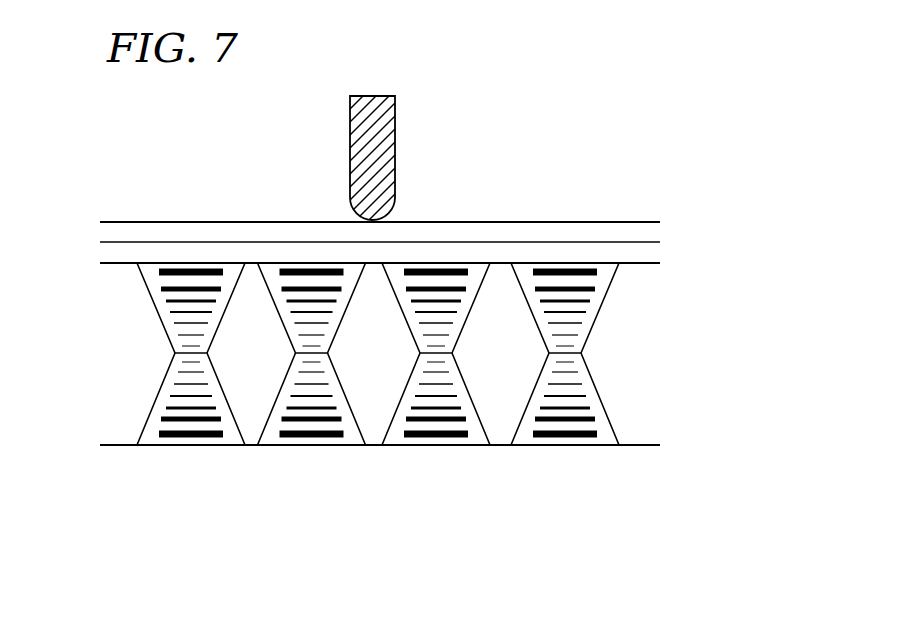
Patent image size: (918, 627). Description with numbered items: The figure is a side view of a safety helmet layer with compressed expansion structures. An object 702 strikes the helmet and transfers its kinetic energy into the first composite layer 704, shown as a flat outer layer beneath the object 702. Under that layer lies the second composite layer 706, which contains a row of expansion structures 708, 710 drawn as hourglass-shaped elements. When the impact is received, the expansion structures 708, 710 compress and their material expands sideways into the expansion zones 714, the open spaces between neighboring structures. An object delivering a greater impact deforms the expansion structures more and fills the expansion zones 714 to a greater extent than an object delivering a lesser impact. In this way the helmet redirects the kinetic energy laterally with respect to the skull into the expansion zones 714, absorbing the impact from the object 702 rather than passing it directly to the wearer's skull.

The object 702 is at (350, 122).
The first composite layer 704 is at (95, 218).
The second composite layer 706 is at (397, 396).
The expansion structure 708 is at (623, 310).
The expansion structure 710 is at (622, 402).
The expansion zones 714 is at (493, 407).